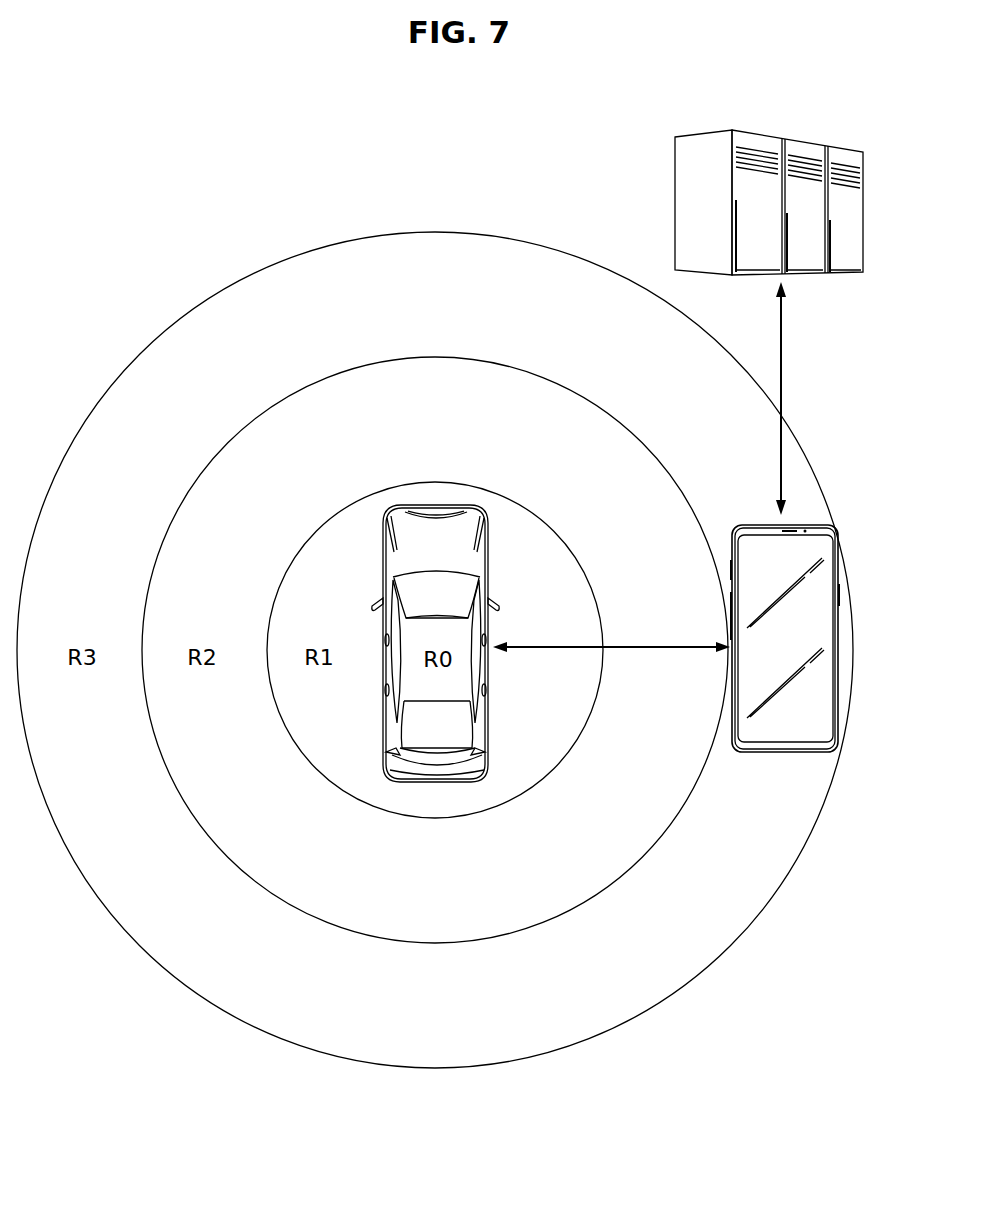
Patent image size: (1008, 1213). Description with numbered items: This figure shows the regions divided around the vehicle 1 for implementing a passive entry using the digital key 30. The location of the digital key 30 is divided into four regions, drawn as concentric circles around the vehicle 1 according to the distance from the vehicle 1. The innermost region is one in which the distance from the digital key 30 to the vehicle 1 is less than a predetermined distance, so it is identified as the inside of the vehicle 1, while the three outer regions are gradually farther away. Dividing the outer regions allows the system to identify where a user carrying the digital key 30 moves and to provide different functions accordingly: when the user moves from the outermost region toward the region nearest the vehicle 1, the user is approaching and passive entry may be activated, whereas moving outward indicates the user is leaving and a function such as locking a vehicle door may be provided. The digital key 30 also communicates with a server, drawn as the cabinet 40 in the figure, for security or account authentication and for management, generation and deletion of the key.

The vehicle 1 is at (489, 688).
The digital key 30 is at (837, 636).
The server 40 is at (810, 141).